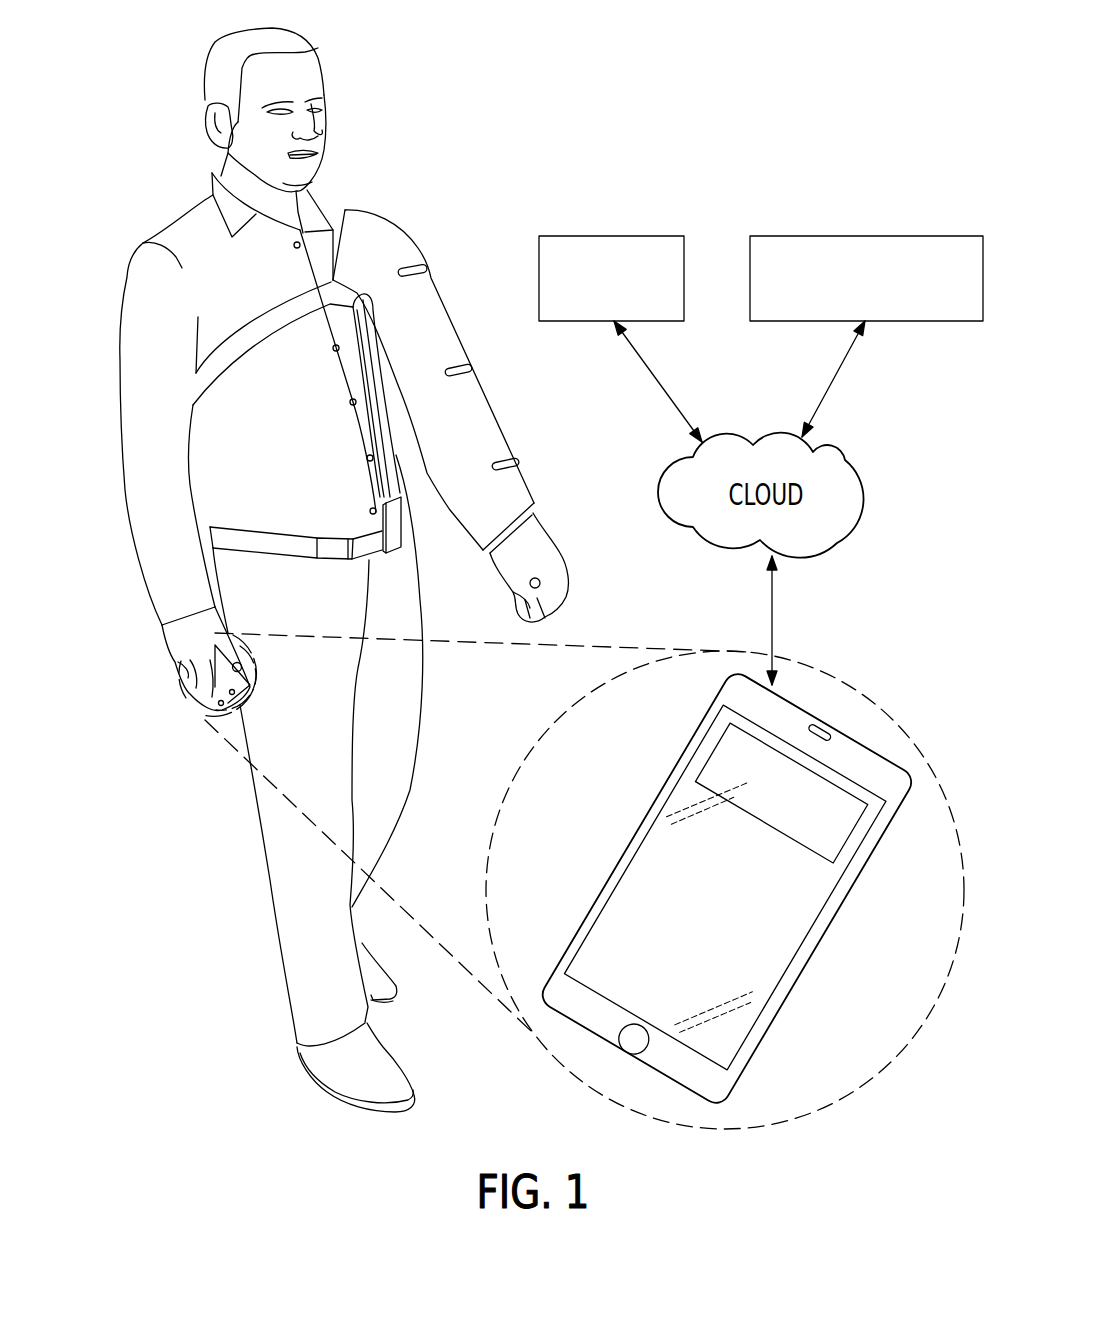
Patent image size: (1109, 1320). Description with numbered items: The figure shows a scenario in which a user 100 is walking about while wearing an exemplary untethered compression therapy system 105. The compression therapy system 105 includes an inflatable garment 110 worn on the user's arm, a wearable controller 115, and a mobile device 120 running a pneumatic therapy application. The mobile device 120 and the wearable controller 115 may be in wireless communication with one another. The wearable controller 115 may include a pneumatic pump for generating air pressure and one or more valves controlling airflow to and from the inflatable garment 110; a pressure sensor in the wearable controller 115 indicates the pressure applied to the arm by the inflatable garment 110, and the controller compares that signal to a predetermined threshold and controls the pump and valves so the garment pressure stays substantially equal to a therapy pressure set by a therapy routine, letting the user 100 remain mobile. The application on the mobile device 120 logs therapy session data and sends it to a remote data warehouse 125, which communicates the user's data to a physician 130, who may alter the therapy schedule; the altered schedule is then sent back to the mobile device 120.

The user 100 is at (140, 205).
The untethered compression therapy system 105 is at (533, 466).
The inflatable garment 110 is at (426, 270).
The wearable controller 115 is at (400, 550).
The mobile device 120 is at (226, 706).
The remote data warehouse 125 is at (868, 236).
The physician 130 is at (588, 309).